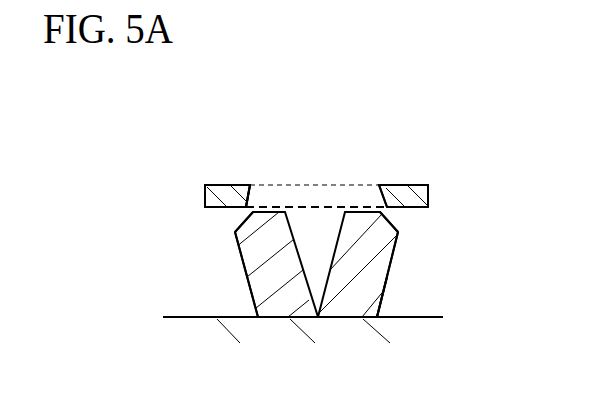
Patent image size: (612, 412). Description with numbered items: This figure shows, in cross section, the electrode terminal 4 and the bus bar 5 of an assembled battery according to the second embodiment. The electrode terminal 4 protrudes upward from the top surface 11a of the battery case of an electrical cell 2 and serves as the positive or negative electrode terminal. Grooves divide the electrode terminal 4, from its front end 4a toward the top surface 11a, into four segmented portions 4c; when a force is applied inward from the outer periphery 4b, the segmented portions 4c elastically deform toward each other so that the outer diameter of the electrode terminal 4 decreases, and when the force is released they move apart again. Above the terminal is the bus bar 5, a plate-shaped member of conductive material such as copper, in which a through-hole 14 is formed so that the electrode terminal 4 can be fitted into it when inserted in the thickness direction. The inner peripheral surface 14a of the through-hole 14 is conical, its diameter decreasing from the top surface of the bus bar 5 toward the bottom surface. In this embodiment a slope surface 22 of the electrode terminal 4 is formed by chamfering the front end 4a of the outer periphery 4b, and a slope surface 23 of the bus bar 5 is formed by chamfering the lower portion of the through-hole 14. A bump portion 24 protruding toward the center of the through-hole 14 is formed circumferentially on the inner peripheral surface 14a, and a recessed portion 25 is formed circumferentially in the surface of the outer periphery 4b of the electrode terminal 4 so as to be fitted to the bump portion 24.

The electrical cell 2 is at (403, 340).
The top surface 11a is at (417, 314).
The electrode terminal 4 is at (400, 258).
The front end 4a is at (358, 186).
The outer periphery 4b is at (380, 304).
The segmented portions 4c is at (246, 266).
The bus bar 5 is at (408, 184).
The through-hole 14 is at (288, 186).
The inner peripheral surface 14a is at (258, 187).
The slope surface 22 is at (234, 229).
The slope surface 23 is at (252, 207).
The bump portion 24 is at (263, 186).
The recessed portion 25 is at (384, 287).